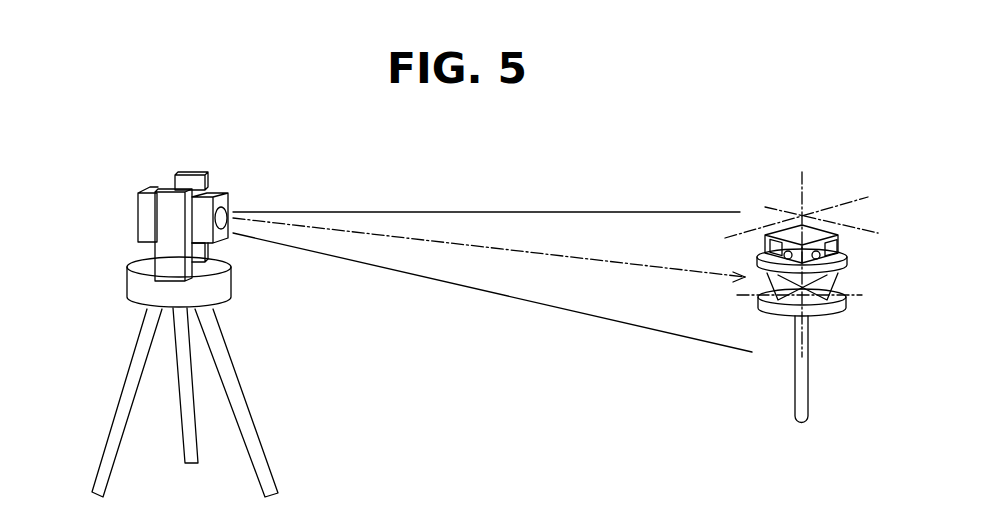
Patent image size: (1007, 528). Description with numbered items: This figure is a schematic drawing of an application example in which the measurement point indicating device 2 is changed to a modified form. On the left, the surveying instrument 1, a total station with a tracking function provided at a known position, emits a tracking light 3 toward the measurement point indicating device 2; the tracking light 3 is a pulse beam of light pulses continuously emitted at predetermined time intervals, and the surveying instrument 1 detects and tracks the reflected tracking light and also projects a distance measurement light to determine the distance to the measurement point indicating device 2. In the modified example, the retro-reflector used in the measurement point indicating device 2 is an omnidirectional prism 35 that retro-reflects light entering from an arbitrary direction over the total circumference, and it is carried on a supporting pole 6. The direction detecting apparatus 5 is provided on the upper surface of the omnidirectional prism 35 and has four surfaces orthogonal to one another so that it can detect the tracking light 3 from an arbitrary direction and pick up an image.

The surveying instrument 1 is at (228, 196).
The measurement point indicating device 2 is at (778, 278).
The tracking light 3 is at (422, 240).
The direction detecting apparatus 5 is at (822, 228).
The supporting pole 6 is at (808, 393).
The omnidirectional prism 35 is at (757, 302).